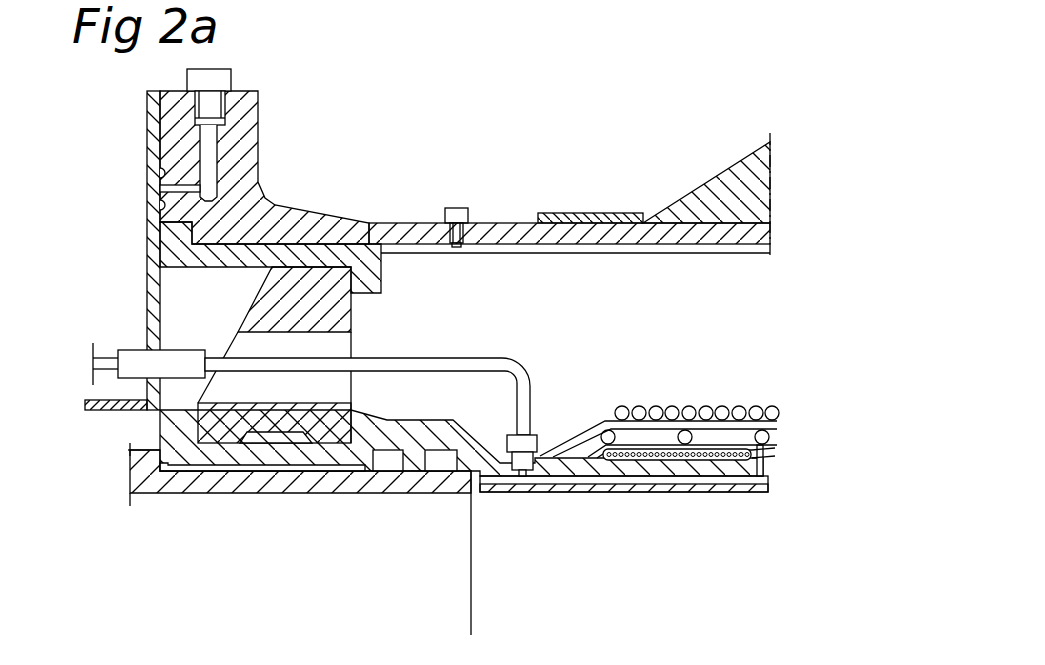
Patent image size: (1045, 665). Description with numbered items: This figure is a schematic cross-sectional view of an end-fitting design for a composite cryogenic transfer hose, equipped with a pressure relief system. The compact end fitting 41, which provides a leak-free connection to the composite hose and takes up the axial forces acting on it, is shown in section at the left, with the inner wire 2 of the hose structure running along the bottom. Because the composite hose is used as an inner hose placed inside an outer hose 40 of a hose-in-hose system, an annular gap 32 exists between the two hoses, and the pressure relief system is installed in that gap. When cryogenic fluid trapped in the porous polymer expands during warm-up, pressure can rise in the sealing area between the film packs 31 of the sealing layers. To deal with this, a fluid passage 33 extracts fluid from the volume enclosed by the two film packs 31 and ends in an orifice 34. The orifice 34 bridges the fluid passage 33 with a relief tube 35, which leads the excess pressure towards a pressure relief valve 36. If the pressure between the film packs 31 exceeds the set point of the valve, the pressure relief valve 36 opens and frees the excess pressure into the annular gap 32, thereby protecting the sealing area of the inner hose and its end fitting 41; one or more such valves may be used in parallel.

The inner wire 2 is at (307, 487).
The film packs 31 is at (773, 440).
The annular gap 32 is at (675, 338).
The fluid passage 33 is at (774, 464).
The orifice 34 is at (653, 492).
The relief tube 35 is at (524, 365).
The pressure relief valve 36 is at (136, 355).
The outer hose 40 is at (709, 200).
The end fitting 41 is at (276, 162).